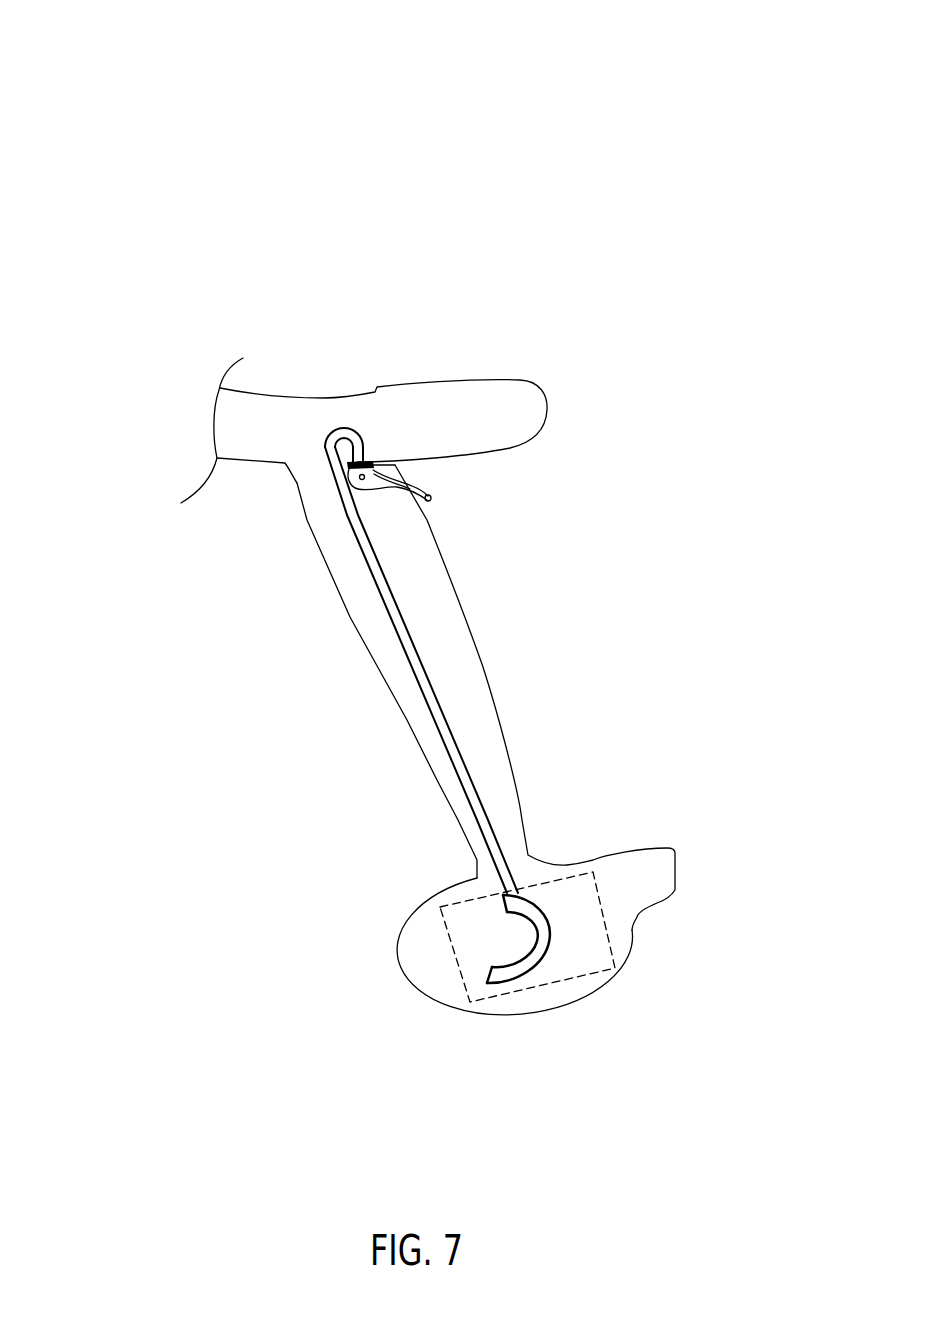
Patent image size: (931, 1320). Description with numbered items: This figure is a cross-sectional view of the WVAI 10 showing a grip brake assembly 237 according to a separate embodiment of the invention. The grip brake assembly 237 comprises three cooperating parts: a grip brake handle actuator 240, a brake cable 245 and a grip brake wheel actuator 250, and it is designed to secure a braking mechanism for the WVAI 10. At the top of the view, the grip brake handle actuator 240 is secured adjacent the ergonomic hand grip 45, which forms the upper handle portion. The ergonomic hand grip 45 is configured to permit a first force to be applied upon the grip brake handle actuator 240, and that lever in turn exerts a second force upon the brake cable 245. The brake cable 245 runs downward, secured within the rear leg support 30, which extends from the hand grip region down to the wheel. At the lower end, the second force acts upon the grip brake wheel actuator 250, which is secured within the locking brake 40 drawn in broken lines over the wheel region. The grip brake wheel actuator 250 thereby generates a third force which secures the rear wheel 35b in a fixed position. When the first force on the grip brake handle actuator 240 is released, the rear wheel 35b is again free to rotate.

The WVAI 10 is at (665, 198).
The grip brake assembly 237 is at (172, 342).
The ergonomic hand grip 45 is at (533, 390).
The grip brake handle actuator 240 is at (432, 497).
The rear leg support 30 is at (485, 667).
The brake cable 245 is at (455, 740).
The locking brake 40 is at (597, 885).
The grip brake wheel actuator 250 is at (588, 933).
The rear wheel 35b is at (577, 1005).